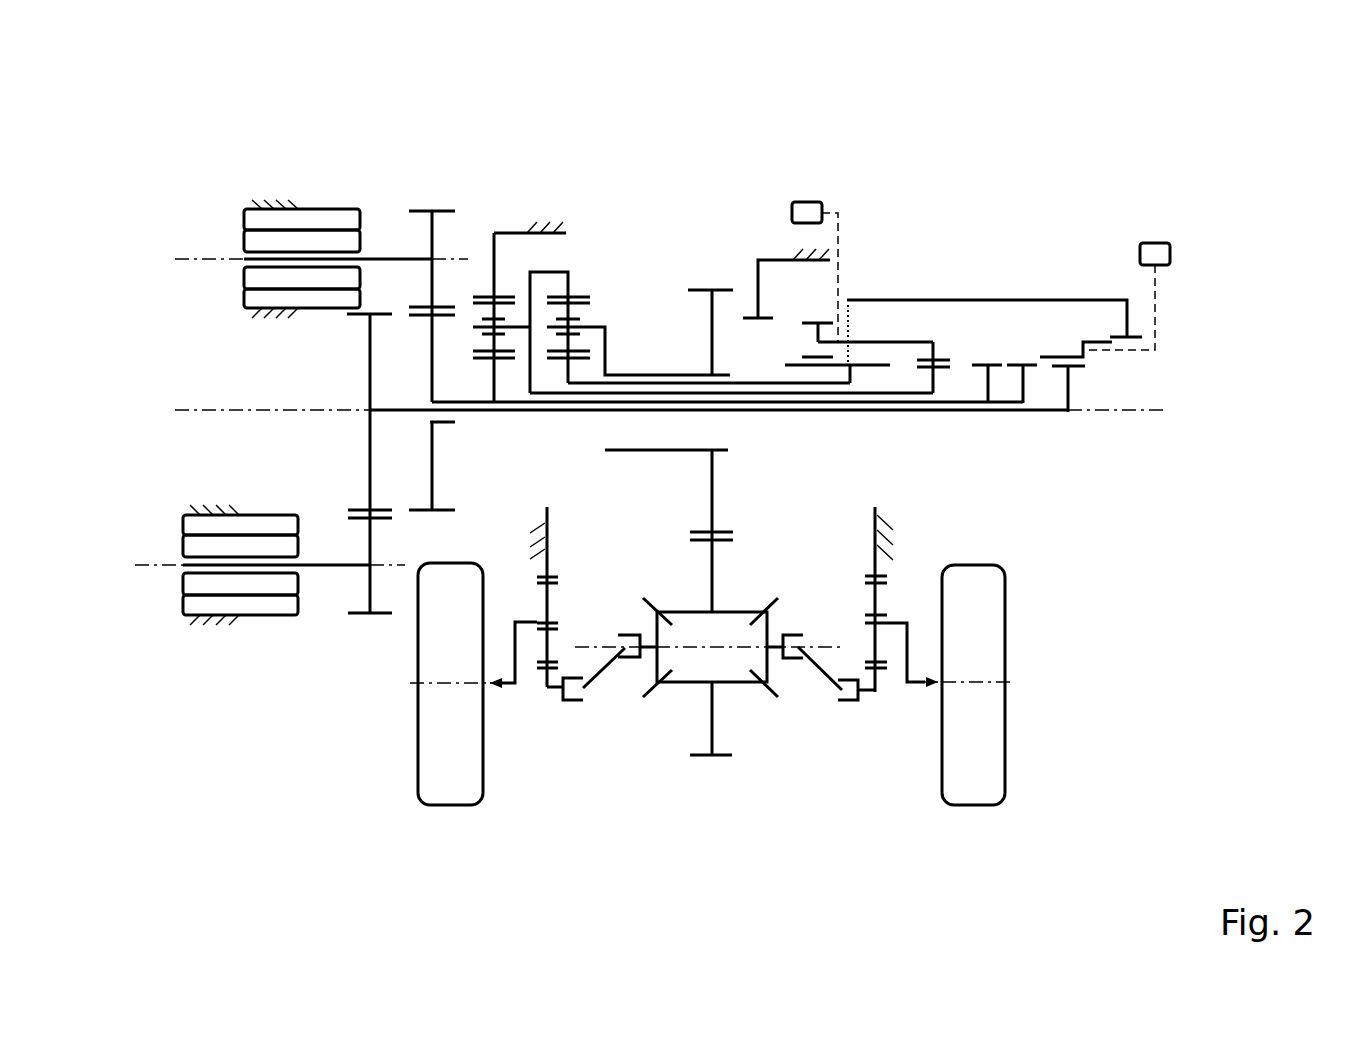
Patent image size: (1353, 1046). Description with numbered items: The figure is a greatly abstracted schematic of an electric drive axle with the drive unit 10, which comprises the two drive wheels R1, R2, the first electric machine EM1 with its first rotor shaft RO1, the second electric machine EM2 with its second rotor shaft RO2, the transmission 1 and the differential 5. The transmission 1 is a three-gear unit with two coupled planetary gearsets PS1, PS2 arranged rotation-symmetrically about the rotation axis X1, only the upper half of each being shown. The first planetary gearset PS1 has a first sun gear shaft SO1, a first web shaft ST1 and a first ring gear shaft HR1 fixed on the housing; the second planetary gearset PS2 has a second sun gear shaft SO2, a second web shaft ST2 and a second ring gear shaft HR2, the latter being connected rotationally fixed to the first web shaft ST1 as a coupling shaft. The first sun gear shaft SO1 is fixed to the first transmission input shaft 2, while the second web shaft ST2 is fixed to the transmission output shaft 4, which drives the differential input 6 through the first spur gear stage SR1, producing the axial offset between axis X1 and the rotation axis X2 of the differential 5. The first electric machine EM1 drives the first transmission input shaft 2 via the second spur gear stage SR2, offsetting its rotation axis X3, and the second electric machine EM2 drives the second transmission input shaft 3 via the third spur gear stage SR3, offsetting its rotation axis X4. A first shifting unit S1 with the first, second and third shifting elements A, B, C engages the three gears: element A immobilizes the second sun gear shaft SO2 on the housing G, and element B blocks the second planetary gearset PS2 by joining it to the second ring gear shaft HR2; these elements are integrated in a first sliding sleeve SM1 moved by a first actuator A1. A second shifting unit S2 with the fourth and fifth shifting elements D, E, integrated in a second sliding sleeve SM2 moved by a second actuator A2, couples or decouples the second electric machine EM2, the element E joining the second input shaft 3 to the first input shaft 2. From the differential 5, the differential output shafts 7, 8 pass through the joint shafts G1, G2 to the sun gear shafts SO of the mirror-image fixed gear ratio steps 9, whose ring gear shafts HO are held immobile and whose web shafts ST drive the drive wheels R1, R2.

The drive unit 10 is at (183, 190).
The transmission 1 is at (691, 164).
The first transmission input shaft 2 is at (453, 422).
The second transmission input shaft 3 is at (395, 410).
The transmission output shaft 4 is at (650, 373).
The differential 5 is at (734, 705).
The differential input 6 is at (715, 610).
The differential output shaft 7 is at (642, 653).
The differential output shaft 8 is at (785, 660).
The fixed gear ratio step 9 is at (548, 709).
The rotation axis of the transmission X1 is at (1120, 410).
The rotation axis of the differential X2 is at (733, 650).
The rotation axis of the first electric machine X3 is at (178, 258).
The rotation axis of the second electric machine X4 is at (178, 565).
The first electric machine EM1 is at (298, 196).
The second electric machine EM2 is at (245, 647).
The first rotor shaft RO1 is at (377, 243).
The second rotor shaft RO2 is at (310, 567).
The first spur gear stage SR1 is at (702, 554).
The second spur gear stage SR2 is at (417, 290).
The third spur gear stage SR3 is at (356, 535).
The first planetary gearset PS1 is at (493, 425).
The second planetary gearset PS2 is at (568, 425).
The first ring gear shaft HR1 is at (486, 290).
The second ring gear shaft HR2 is at (570, 282).
The first sun gear shaft SO1 is at (488, 378).
The second sun gear shaft SO2 is at (600, 343).
The first web shaft ST1 is at (522, 322).
The second web shaft ST2 is at (610, 375).
The rotationally fixed component G is at (540, 225).
The joint shaft G1 is at (607, 670).
The joint shaft G2 is at (848, 700).
The first shifting element A is at (786, 289).
The second shifting element B is at (932, 367).
The third shifting element C is at (986, 384).
The fourth shifting element D is at (1112, 323).
The fifth shifting element E is at (1021, 384).
The first actuator A1 is at (806, 203).
The second actuator A2 is at (1172, 252).
The first shifting unit S1 is at (862, 326).
The second shifting unit S2 is at (1054, 345).
The first sliding sleeve SM1 is at (897, 340).
The second sliding sleeve SM2 is at (1085, 362).
The ring gear of wheel-side planetary HO is at (540, 572).
The sun gear shaft SO is at (545, 683).
The web shaft ST is at (540, 668).
The drive wheel R1 is at (437, 775).
The drive wheel R2 is at (985, 775).